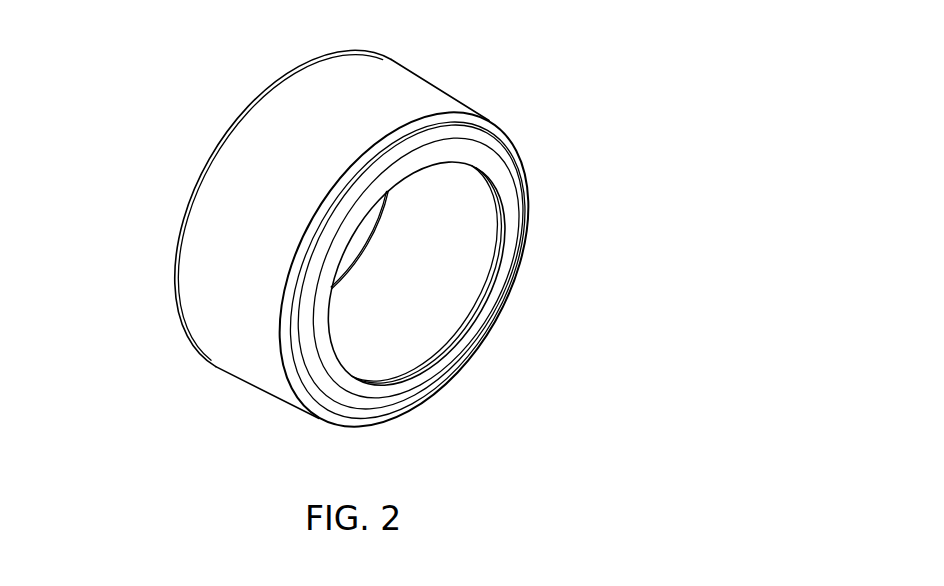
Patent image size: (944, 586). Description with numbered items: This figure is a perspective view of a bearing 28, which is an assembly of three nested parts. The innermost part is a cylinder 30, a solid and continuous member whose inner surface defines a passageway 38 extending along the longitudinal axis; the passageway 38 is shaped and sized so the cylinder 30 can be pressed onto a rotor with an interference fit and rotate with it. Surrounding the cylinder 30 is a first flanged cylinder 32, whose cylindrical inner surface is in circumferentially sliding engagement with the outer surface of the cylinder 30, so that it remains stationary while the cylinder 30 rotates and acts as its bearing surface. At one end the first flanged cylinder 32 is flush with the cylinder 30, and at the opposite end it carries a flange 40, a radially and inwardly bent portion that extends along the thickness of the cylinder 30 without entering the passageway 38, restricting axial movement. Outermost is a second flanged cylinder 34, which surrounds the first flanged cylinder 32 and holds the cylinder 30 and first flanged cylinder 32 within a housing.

The bearing 28 is at (353, 240).
The cylinder 30 is at (432, 330).
The first flanged cylinder 32 is at (343, 410).
The second flanged cylinder 34 is at (230, 332).
The passageway 38 is at (462, 243).
The flange 40 is at (500, 162).